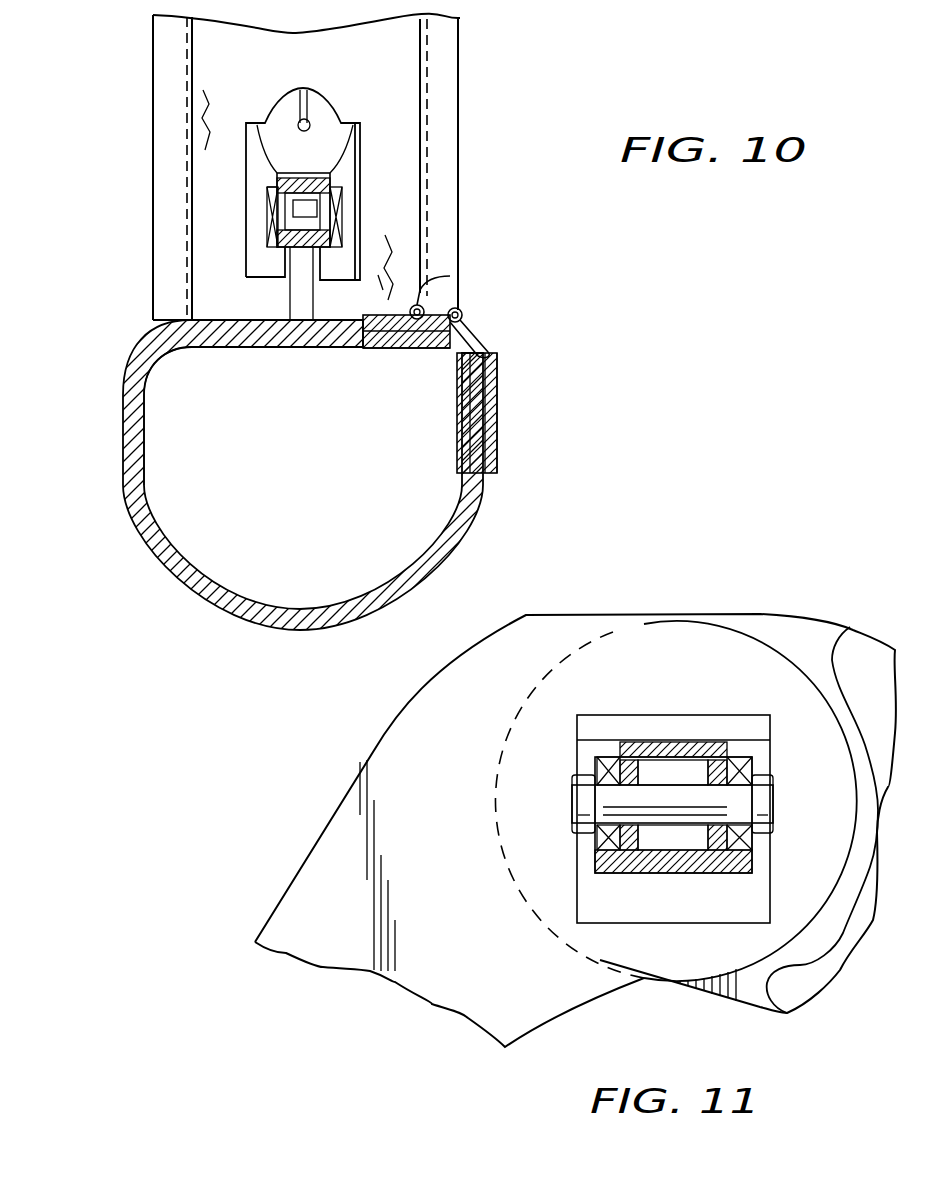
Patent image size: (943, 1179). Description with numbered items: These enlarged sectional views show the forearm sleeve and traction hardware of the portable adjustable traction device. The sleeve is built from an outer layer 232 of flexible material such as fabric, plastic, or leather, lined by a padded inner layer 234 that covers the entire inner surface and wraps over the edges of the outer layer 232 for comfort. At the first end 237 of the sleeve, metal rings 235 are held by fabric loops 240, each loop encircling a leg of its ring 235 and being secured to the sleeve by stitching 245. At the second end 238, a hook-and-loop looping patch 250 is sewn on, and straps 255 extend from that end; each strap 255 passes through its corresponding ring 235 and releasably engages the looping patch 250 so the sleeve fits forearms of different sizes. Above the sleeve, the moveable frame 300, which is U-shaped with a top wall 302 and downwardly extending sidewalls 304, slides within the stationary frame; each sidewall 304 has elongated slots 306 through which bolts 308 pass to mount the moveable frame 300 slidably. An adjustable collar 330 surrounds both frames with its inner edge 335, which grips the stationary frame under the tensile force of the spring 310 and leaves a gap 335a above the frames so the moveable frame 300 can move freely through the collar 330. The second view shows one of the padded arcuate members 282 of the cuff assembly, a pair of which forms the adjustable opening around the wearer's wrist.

In FIG. 10, the moveable frame 300 is at (357, 170).
In FIG. 10, the top wall 302 is at (353, 124).
In FIG. 11, the top wall 302 is at (697, 752).
In FIG. 10, the sidewalls 304 is at (270, 207).
In FIG. 11, the sidewalls 304 is at (612, 775).
In FIG. 11, the elongated slots 306 is at (740, 775).
In FIG. 11, the bolts 308 is at (585, 798).
In FIG. 10, the spring 310 is at (316, 90).
In FIG. 10, the adjustable collar 330 is at (257, 123).
In FIG. 10, the inner edge 335 is at (280, 193).
In FIG. 11, the inner edge 335 is at (618, 773).
In FIG. 10, the gap 335a is at (277, 187).
In FIG. 10, the outer layer 232 is at (300, 630).
In FIG. 10, the padded inner layer 234 is at (145, 474).
In FIG. 10, the metal rings 235 is at (424, 312).
In FIG. 10, the first end 237 is at (403, 357).
In FIG. 10, the second end 238 is at (450, 363).
In FIG. 10, the fabric loops 240 is at (450, 276).
In FIG. 10, the stitching 245 is at (363, 350).
In FIG. 10, the looping patch 250 is at (487, 445).
In FIG. 10, the straps 255 is at (493, 358).
In FIG. 11, the arcuate members 282 is at (470, 1005).